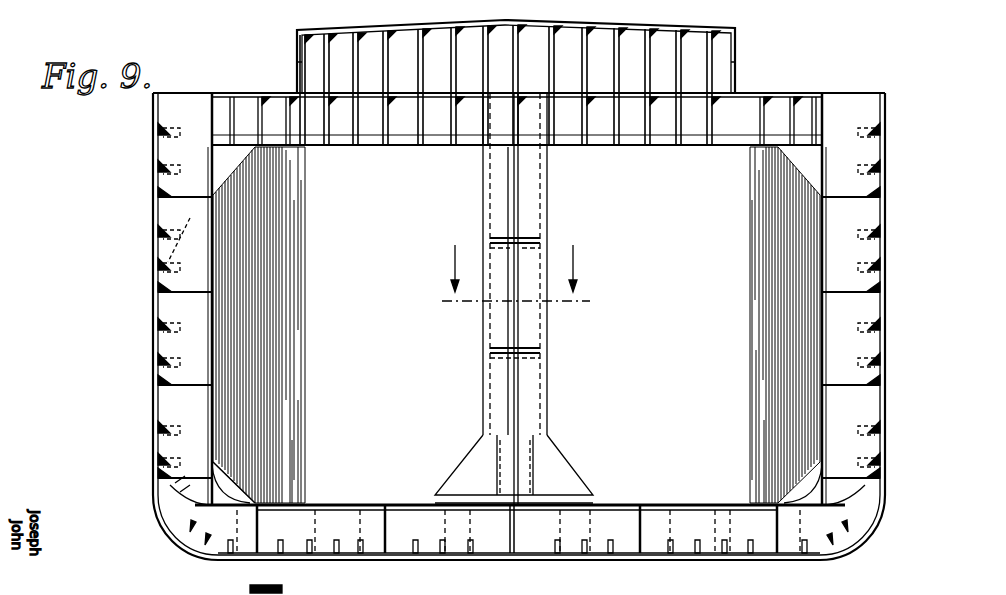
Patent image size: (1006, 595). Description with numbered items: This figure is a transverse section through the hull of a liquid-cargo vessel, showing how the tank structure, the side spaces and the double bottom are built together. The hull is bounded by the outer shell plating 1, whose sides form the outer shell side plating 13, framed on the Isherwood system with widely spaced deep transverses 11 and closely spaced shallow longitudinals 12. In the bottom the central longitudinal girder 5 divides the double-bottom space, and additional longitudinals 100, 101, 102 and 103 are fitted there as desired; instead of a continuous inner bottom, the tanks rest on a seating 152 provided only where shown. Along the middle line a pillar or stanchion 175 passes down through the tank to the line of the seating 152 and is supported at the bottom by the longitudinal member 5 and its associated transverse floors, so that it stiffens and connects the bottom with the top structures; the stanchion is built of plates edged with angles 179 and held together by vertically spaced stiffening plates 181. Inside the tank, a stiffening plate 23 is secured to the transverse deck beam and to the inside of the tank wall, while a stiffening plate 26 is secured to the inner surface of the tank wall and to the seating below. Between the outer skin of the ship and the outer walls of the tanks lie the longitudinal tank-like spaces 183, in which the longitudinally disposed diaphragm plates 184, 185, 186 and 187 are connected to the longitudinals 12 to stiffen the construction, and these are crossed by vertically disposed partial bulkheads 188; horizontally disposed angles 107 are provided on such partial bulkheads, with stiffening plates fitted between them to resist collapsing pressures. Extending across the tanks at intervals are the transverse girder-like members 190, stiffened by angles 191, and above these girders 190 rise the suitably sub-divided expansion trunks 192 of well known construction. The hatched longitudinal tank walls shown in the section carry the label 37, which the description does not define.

The outer shell plating 1 is at (400, 562).
The central longitudinal girder 5 is at (508, 560).
The deep Isherwood transverse 11 is at (515, 277).
The shallow longitudinal 12 is at (150, 248).
The outer shell side plating 13 is at (165, 212).
The stiffening plate 23 is at (232, 157).
The stiffening plate 26 is at (240, 490).
The longitudinal bulkhead 37 is at (205, 360).
The additional longitudinal 100 is at (777, 540).
The additional longitudinal 101 is at (642, 520).
The additional longitudinal 102 is at (385, 520).
The additional longitudinal 103 is at (258, 528).
The horizontally disposed angle 107 is at (185, 232).
The seating 152 is at (202, 497).
The pillar or stanchion 175 is at (530, 393).
The angle 179 is at (268, 586).
The stiffening plate 181 is at (530, 238).
The longitudinal tank like space 183 is at (165, 222).
The diaphragm plate 184 is at (168, 478).
The diaphragm plate 185 is at (165, 385).
The diaphragm plate 186 is at (180, 292).
The diaphragm plate 187 is at (183, 190).
The partial bulk-head 188 is at (180, 303).
The transverse girder like member 190 is at (330, 140).
The angle 191 is at (452, 117).
The expansion trunk 192 is at (298, 65).